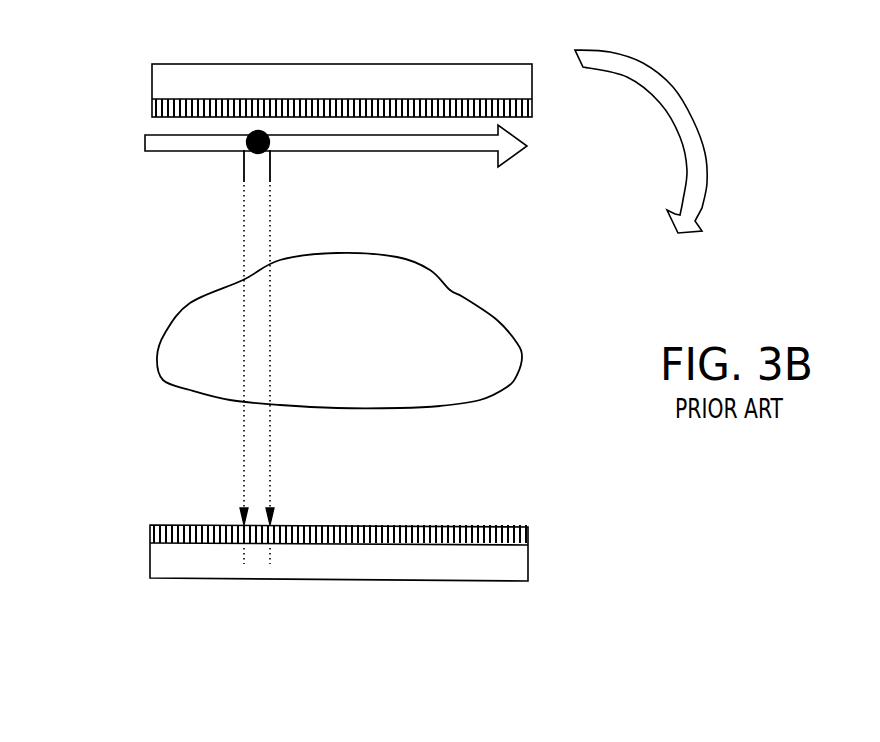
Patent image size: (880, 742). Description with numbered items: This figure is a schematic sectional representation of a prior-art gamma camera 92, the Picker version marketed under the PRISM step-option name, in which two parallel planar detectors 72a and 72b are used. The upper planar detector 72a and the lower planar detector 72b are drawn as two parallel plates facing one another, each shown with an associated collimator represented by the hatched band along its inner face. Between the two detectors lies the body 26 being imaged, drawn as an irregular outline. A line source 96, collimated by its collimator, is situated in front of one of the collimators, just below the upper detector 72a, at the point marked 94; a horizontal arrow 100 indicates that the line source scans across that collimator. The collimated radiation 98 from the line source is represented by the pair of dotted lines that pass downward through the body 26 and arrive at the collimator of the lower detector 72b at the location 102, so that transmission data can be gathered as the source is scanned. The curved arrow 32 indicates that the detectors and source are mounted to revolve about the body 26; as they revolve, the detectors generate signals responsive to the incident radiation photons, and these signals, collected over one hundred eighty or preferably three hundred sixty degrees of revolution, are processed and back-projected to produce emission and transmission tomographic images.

The prior art probe card test arrangement 92 is at (103, 89).
The planar detector 72a is at (194, 78).
The light source / sensor element 94 is at (260, 131).
The direction of movement arrow 100 is at (440, 151).
The line source 96 is at (244, 157).
The projected light beam path 98 is at (243, 446).
The body 26 is at (222, 302).
The planar detector 72b is at (480, 578).
The beam impingement position 102 is at (254, 574).
The arrows 32 is at (662, 82).